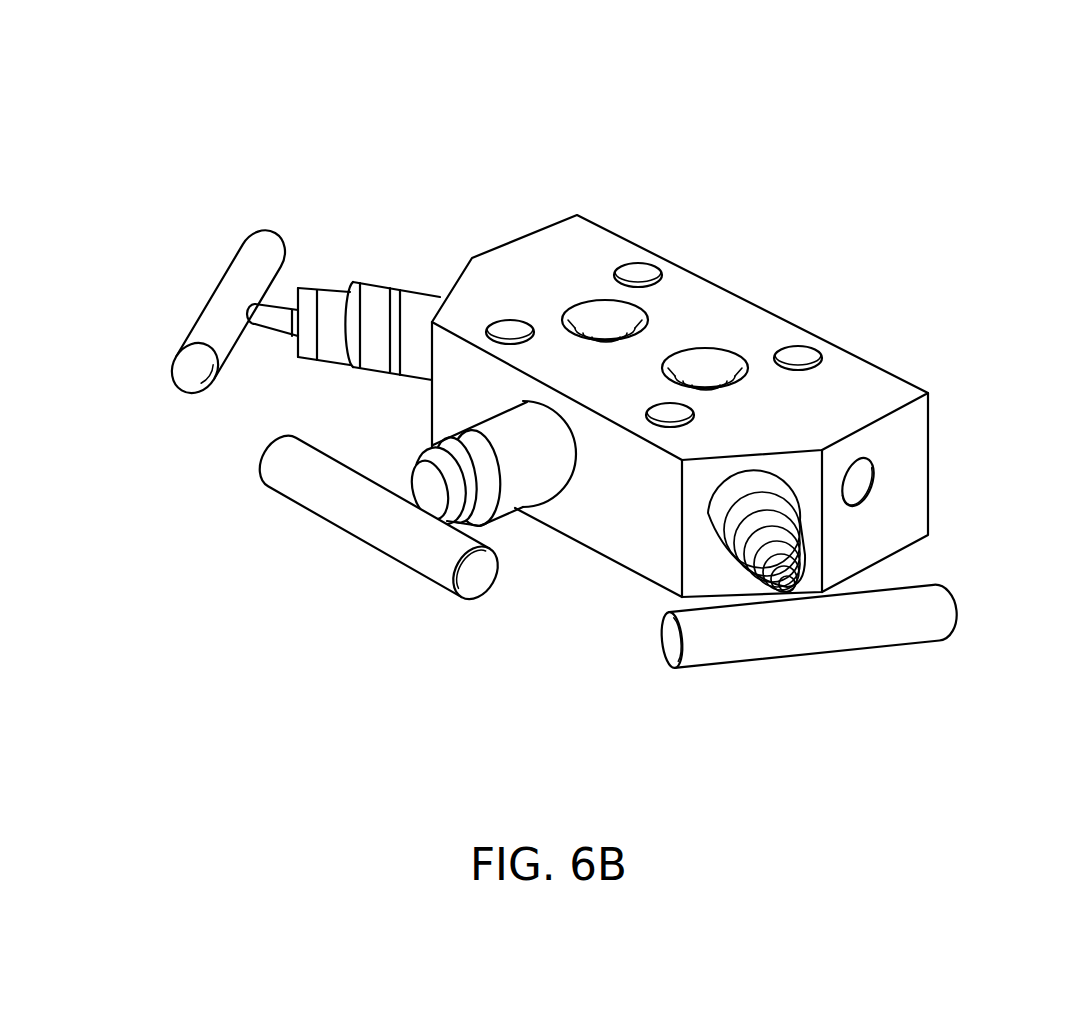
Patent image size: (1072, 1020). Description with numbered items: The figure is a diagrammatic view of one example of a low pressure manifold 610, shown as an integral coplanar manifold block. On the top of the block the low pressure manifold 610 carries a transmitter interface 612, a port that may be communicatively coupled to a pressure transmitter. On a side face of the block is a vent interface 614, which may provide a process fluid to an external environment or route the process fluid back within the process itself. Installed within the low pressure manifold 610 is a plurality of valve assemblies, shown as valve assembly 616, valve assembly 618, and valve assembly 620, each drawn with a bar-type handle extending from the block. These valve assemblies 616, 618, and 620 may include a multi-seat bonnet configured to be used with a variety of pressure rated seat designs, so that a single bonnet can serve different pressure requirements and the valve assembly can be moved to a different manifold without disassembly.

The low pressure manifold 610 is at (728, 148).
The transmitter interface 612 is at (718, 350).
The vent interface 614 is at (872, 477).
The valve assembly 616 is at (860, 653).
The valve assembly 618 is at (367, 545).
The valve assembly 620 is at (187, 326).